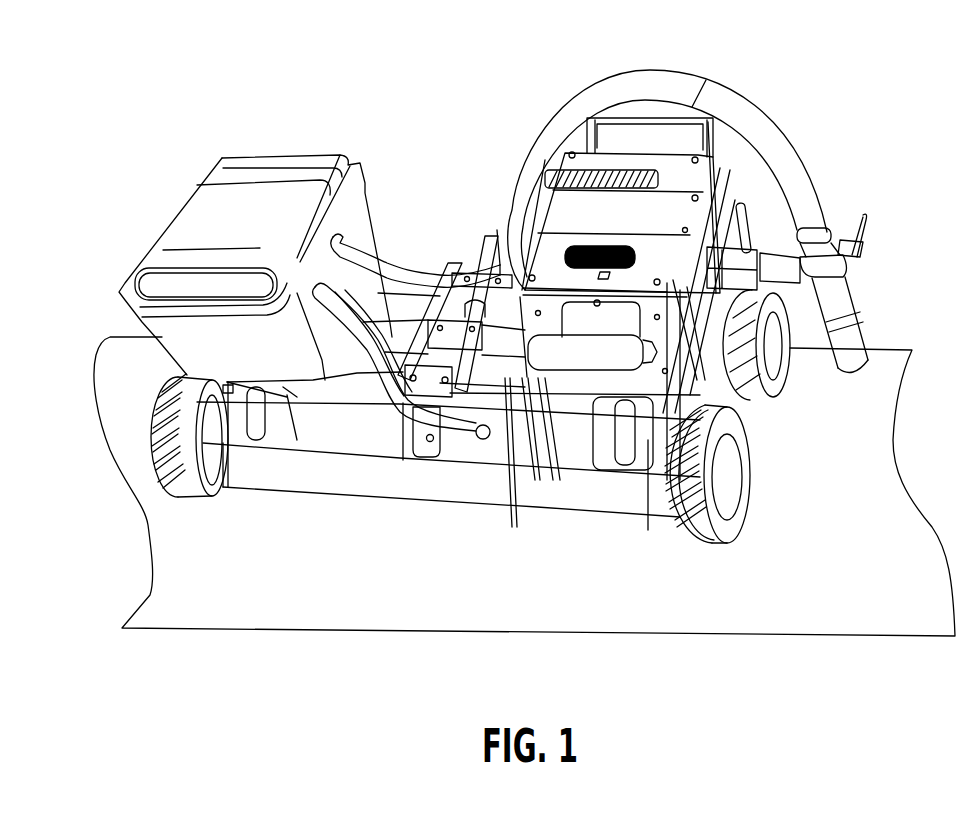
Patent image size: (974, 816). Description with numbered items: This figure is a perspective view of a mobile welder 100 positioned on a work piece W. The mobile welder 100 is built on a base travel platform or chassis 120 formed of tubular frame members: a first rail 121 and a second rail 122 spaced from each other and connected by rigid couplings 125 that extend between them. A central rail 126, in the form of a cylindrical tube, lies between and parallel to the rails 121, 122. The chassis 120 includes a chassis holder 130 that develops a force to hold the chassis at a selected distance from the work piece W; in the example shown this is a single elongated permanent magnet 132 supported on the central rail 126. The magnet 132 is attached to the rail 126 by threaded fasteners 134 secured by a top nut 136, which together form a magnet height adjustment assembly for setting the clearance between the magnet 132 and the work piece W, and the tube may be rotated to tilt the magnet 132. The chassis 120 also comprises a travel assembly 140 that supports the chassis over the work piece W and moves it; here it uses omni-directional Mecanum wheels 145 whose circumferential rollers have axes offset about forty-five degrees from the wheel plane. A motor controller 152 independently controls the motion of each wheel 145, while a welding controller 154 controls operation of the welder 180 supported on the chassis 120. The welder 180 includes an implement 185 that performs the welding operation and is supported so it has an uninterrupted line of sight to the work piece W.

The mobile welder 100 is at (302, 84).
The chassis 120 is at (481, 495).
The first rail 121 is at (392, 256).
The second rail 122 is at (277, 477).
The couplings 125 is at (485, 270).
The central rail 126 is at (509, 465).
The chassis holder 130 is at (535, 480).
The magnet 132 is at (506, 409).
The threaded fasteners 134 is at (497, 230).
The top nut 136 is at (553, 480).
The travel assembly 140 is at (767, 517).
The Mecanum wheel 145 is at (173, 502).
The motor controller 152 is at (215, 206).
The welding controller 154 is at (662, 150).
The welder 180 is at (556, 67).
The implement 185 is at (850, 307).
The work piece W is at (877, 455).